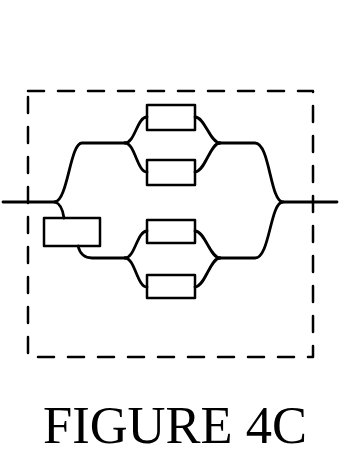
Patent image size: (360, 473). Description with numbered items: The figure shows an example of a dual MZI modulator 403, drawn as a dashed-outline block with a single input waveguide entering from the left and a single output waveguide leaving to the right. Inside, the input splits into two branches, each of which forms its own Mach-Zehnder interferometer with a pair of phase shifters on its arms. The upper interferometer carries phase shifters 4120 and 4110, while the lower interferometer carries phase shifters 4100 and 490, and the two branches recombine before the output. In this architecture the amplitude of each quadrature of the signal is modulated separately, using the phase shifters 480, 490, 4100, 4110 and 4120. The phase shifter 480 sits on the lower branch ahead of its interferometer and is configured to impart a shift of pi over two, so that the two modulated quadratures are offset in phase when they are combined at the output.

The dual MZI modulator 403 is at (170, 224).
The phase shifter 480 is at (57, 235).
The phase shifter 490 is at (172, 289).
The phase shifter 4100 is at (173, 233).
The phase shifter 4110 is at (178, 172).
The phase shifter 4120 is at (172, 112).